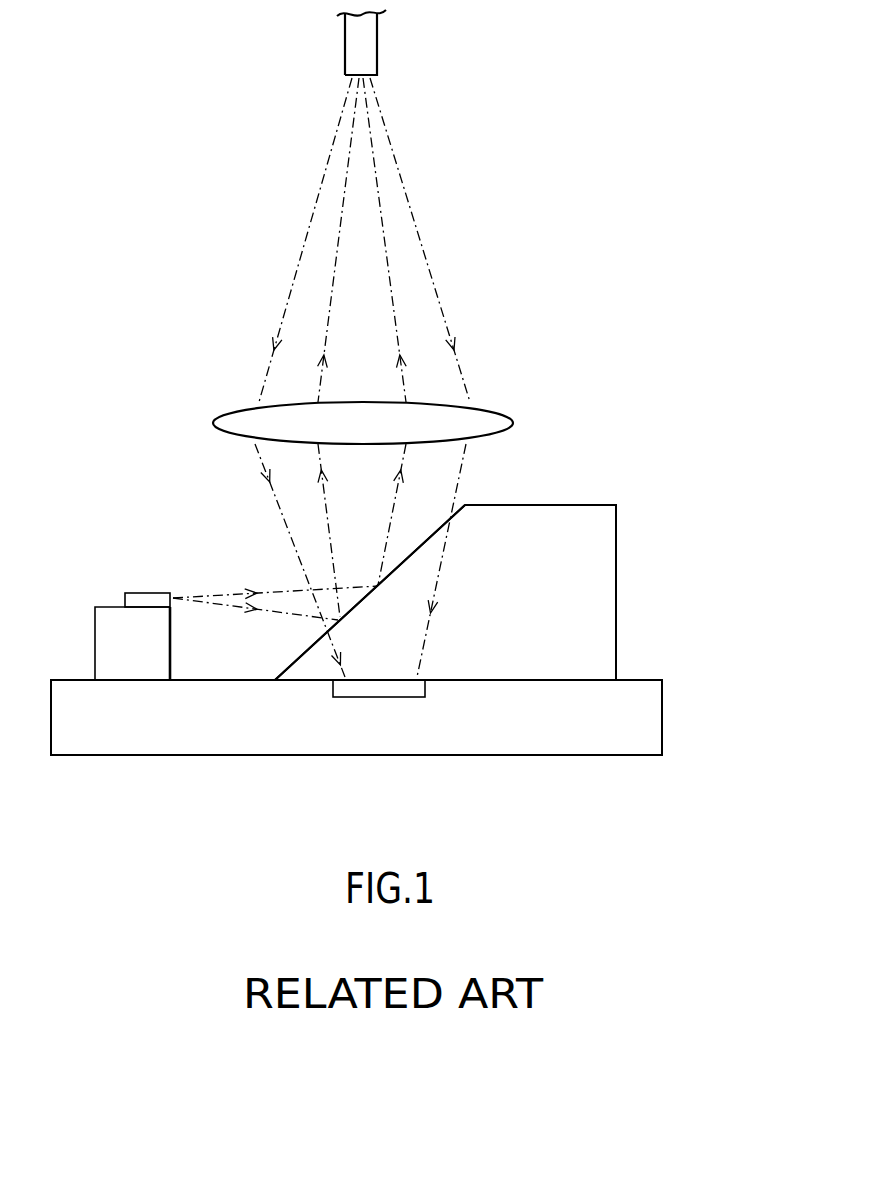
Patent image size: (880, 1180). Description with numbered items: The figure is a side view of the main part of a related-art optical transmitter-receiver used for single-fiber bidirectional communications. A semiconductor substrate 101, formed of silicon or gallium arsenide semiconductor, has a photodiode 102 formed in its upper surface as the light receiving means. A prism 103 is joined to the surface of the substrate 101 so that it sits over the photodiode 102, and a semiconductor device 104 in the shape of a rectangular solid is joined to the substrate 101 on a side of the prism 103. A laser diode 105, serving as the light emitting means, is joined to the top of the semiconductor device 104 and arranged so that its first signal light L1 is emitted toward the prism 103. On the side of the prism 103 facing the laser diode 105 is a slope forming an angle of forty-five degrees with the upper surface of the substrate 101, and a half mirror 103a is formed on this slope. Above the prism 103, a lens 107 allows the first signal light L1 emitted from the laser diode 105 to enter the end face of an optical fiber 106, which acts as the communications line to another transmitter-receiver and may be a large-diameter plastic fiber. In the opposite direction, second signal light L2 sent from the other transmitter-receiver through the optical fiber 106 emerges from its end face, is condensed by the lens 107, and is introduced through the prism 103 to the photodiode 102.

The semiconductor substrate 101 is at (662, 712).
The photodiode 102 is at (380, 690).
The prism 103 is at (616, 538).
The half mirror 103a is at (456, 507).
The semiconductor device 104 is at (112, 612).
The laser diode 105 is at (155, 593).
The optical fiber 106 is at (377, 41).
The lens 107 is at (493, 409).
The first signal light L1 is at (343, 222).
The second signal light L2 is at (412, 217).